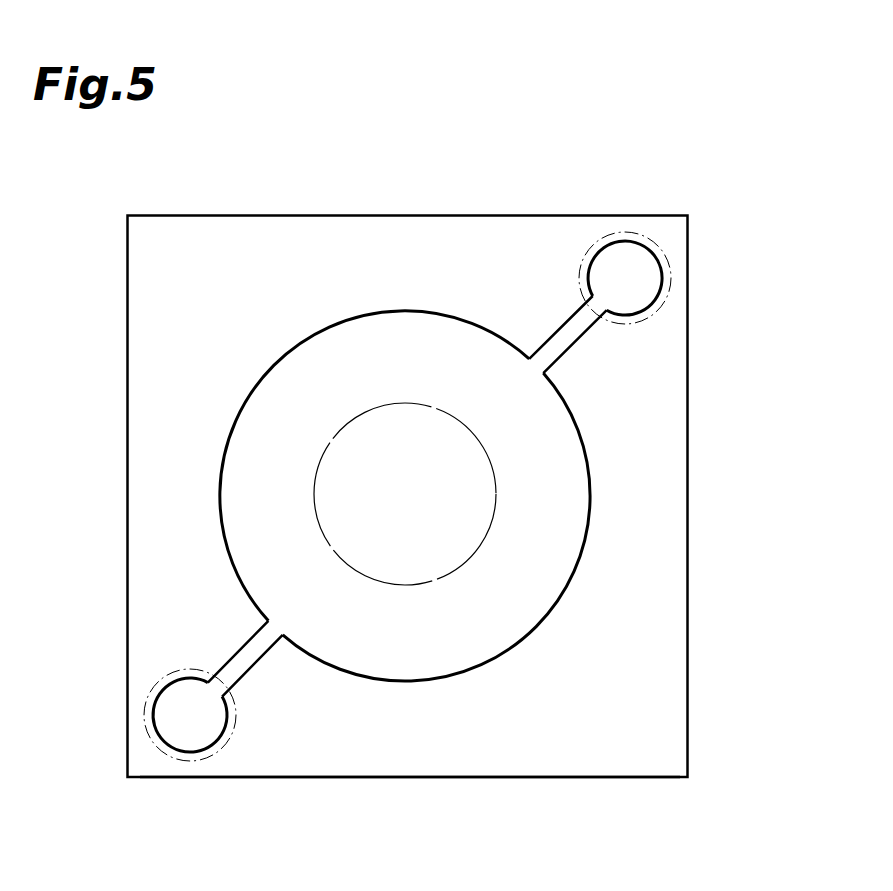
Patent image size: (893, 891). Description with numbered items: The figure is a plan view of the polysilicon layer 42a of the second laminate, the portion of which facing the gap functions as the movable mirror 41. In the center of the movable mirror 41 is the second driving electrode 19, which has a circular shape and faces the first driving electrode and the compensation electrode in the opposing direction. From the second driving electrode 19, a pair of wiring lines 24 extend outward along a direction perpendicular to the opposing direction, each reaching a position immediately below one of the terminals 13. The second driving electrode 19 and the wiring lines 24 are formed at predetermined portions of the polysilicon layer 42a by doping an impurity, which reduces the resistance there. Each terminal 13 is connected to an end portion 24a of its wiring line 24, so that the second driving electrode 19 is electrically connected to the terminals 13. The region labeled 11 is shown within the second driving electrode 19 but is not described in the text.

The movable mirror 41 is at (373, 208).
The polysilicon layer 42a is at (459, 762).
The second driving electrode 19 is at (410, 322).
The light emitting element mounting region 11 is at (421, 587).
The terminal 13 is at (650, 236).
The wiring line 24 is at (582, 337).
The end portion 24a is at (645, 280).